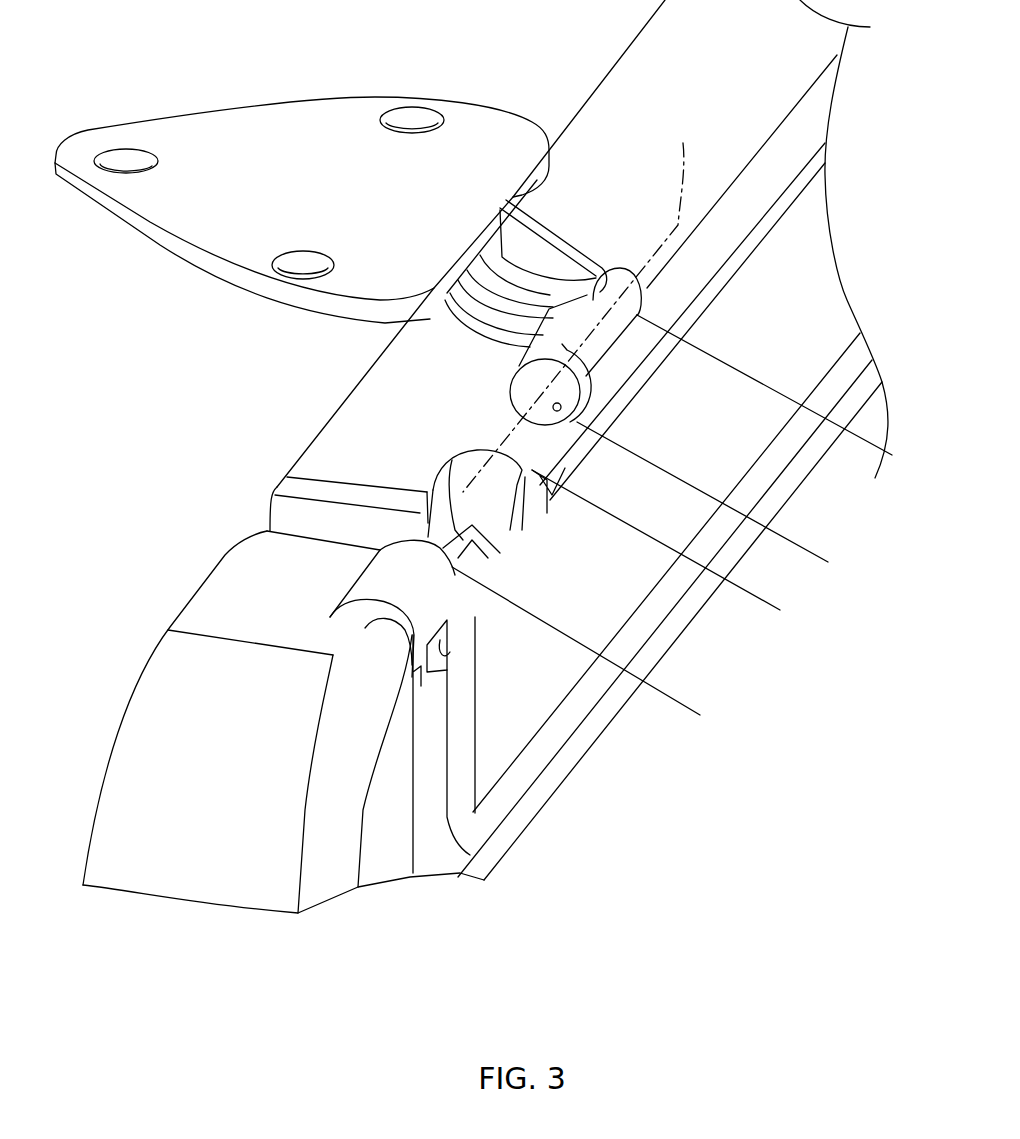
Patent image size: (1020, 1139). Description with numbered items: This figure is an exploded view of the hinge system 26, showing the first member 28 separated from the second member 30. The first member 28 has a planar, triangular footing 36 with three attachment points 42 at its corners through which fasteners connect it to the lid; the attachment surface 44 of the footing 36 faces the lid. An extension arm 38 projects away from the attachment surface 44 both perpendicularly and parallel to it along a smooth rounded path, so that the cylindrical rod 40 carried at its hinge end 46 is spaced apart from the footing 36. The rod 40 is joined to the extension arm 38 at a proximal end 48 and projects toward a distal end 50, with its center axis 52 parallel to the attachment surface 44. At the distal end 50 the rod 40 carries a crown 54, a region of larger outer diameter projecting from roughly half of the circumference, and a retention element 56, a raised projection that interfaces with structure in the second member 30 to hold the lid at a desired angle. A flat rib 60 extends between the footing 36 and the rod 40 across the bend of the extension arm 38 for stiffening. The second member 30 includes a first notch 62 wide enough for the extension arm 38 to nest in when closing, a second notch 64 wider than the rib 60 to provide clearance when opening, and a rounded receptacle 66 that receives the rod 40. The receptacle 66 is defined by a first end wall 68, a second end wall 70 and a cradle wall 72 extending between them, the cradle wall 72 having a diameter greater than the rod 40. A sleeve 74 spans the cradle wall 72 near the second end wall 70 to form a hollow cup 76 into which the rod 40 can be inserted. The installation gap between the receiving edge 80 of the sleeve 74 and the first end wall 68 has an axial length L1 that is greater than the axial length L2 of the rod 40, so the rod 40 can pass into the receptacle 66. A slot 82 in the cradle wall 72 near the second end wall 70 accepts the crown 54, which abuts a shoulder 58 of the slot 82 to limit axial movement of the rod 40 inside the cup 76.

The hinge system 26 is at (212, 358).
The first member 28 is at (223, 110).
The second member 30 is at (201, 668).
The footing 36 is at (289, 138).
The extension arm 38 is at (462, 322).
The rod 40 is at (598, 322).
The attachment points 42 is at (125, 165).
The attachment surface 44 is at (226, 235).
The hinge end 46 is at (545, 290).
The proximal end 48 is at (630, 302).
The distal end 50 is at (518, 393).
The center axis 52 is at (582, 305).
The crown 54 is at (585, 385).
The retention element 56 is at (556, 412).
The shoulder 58 is at (445, 663).
The rib 60 is at (530, 233).
The first notch 62 is at (272, 516).
The second notch 64 is at (516, 534).
The receptacle 66 is at (447, 492).
The first end wall 68 is at (465, 462).
The second end wall 70 is at (352, 603).
The cradle wall 72 is at (500, 550).
The sleeve 74 is at (393, 567).
The cup 76 is at (368, 589).
The receiving edge 80 is at (455, 570).
The slot 82 is at (437, 680).
The length of the installation gap L1 is at (752, 593).
The length of the rod L2 is at (862, 437).